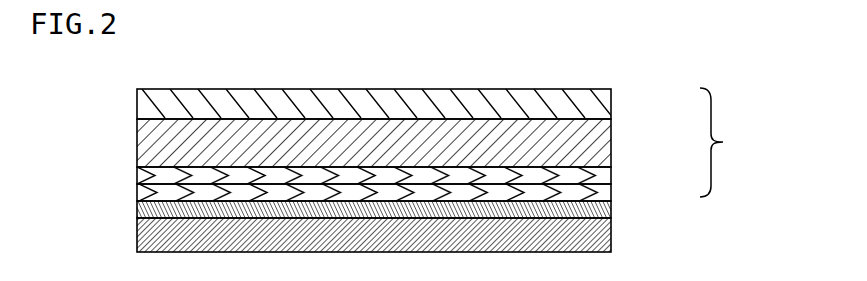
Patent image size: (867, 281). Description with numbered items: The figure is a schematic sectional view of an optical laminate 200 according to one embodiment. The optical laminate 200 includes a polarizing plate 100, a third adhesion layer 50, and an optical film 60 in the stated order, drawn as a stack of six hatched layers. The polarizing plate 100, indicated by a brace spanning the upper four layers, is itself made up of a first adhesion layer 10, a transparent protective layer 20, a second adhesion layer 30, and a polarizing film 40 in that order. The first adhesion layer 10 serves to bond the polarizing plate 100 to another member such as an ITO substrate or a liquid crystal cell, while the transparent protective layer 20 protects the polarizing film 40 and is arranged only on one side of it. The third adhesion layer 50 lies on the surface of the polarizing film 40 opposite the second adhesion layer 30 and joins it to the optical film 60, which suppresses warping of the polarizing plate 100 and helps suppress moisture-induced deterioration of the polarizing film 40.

The first adhesion layer 10 is at (605, 113).
The transparent protective layer 20 is at (606, 142).
The second adhesion layer 30 is at (606, 175).
The polarizing film 40 is at (607, 195).
The third adhesion layer 50 is at (606, 207).
The optical film 60 is at (606, 235).
The polarizing plate 100 is at (735, 142).
The optical laminate 200 is at (632, 56).